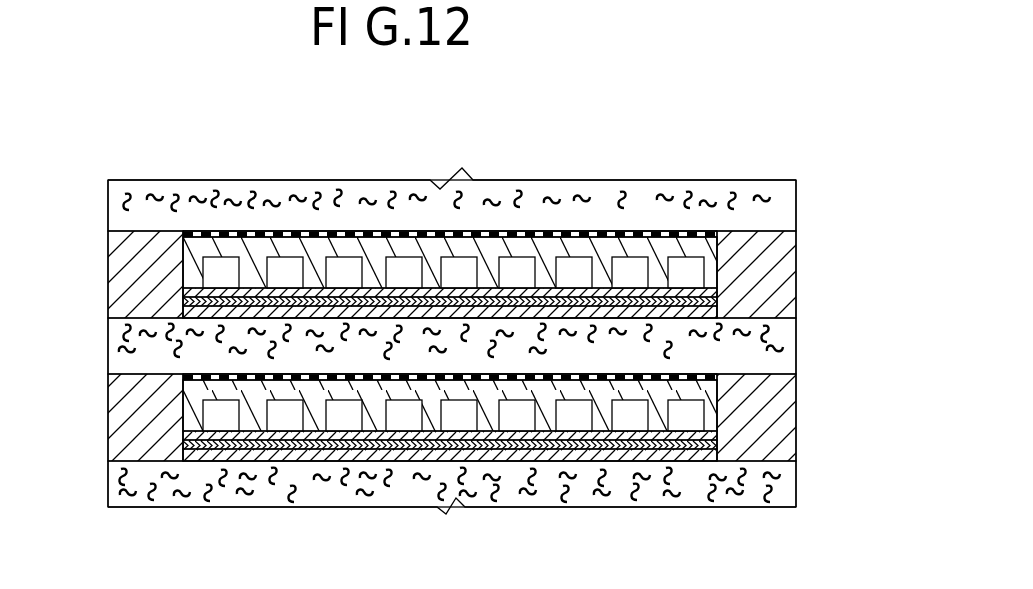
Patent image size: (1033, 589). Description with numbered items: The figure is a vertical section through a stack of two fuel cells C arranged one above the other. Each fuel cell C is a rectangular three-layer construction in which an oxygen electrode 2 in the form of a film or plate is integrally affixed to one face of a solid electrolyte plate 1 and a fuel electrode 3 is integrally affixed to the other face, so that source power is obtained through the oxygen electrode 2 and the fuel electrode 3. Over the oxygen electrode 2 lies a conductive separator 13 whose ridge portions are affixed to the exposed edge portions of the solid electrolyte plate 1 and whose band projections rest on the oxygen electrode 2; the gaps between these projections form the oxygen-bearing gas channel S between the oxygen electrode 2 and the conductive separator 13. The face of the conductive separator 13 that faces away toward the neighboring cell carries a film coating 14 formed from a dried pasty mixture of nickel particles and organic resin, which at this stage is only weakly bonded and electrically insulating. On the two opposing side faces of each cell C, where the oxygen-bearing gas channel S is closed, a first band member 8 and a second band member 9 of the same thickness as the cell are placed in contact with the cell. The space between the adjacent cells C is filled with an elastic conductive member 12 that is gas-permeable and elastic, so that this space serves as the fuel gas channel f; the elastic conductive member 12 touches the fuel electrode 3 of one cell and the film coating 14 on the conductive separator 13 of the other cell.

The solid electrolyte plate 1 is at (714, 293).
The oxygen electrode 2 is at (716, 266).
The fuel electrode 3 is at (712, 318).
The first band member 8 is at (108, 288).
The second band member 9 is at (790, 243).
The elastic conductive member 12 is at (576, 192).
The conductive separator 13 is at (712, 245).
The film coating 14 is at (477, 233).
The fuel cell C is at (183, 267).
The oxygen-bearing gas channel S is at (347, 275).
The fuel gas channel f is at (708, 193).